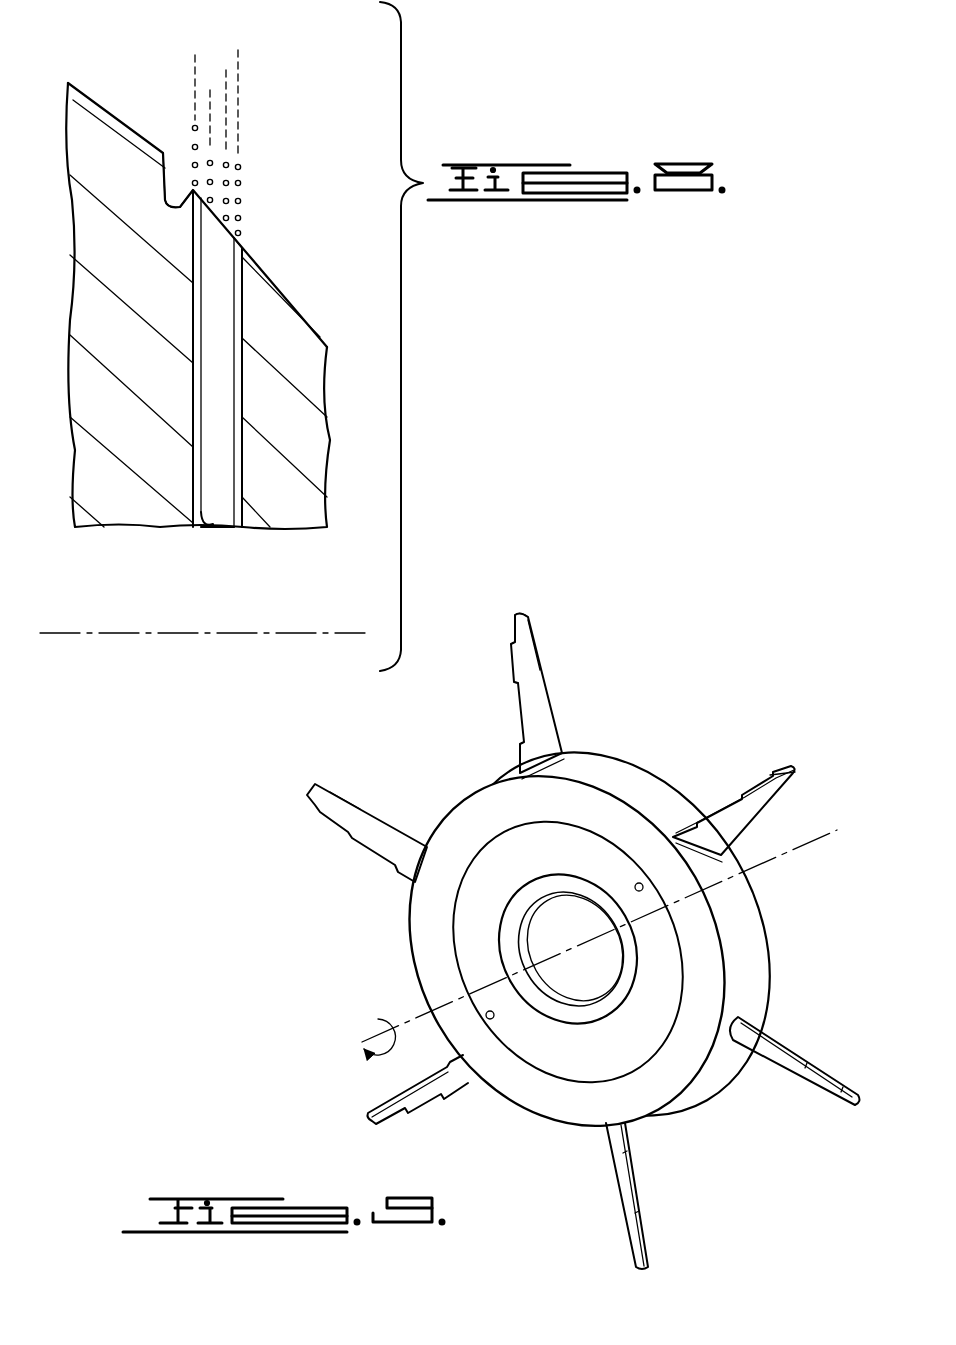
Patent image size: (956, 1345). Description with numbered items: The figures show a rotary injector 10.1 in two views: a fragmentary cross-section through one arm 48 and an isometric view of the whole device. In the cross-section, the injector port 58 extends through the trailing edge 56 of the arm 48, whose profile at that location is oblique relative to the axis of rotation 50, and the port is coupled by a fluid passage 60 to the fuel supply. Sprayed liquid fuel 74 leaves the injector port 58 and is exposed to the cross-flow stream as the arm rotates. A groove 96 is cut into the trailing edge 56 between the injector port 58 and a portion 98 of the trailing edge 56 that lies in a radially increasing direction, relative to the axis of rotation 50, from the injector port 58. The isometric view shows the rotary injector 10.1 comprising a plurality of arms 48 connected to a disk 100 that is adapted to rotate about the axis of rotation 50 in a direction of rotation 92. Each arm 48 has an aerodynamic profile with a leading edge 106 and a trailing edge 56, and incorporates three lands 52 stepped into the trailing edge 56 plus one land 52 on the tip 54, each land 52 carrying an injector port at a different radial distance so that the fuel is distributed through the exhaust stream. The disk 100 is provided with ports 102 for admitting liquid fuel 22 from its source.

In FIG. 9, the rotary injector 10.1 is at (571, 895).
In FIG. 8, the liquid fuel 22 is at (205, 528).
In FIG. 8, the arm 48 is at (105, 487).
In FIG. 9, the arm 48 is at (551, 697).
In FIG. 8, the axis of rotation 50 is at (170, 636).
In FIG. 9, the axis of rotation 50 is at (787, 872).
In FIG. 9, the land 52 is at (512, 638).
In FIG. 9, the tip 54 is at (530, 610).
In FIG. 8, the trailing edge 56 is at (292, 294).
In FIG. 9, the trailing edge 56 is at (502, 660).
In FIG. 8, the injector port 58 is at (246, 234).
In FIG. 8, the fluid passage 60 is at (220, 533).
In FIG. 8, the sprayed liquid fuel 74 is at (264, 152).
In FIG. 9, the rotation 92 is at (376, 1018).
In FIG. 8, the groove 96 is at (173, 165).
In FIG. 8, the portion of the trailing edge 98 is at (87, 90).
In FIG. 9, the disk 100 is at (652, 768).
In FIG. 9, the port 102 is at (634, 886).
In FIG. 9, the leading edge 106 is at (537, 662).